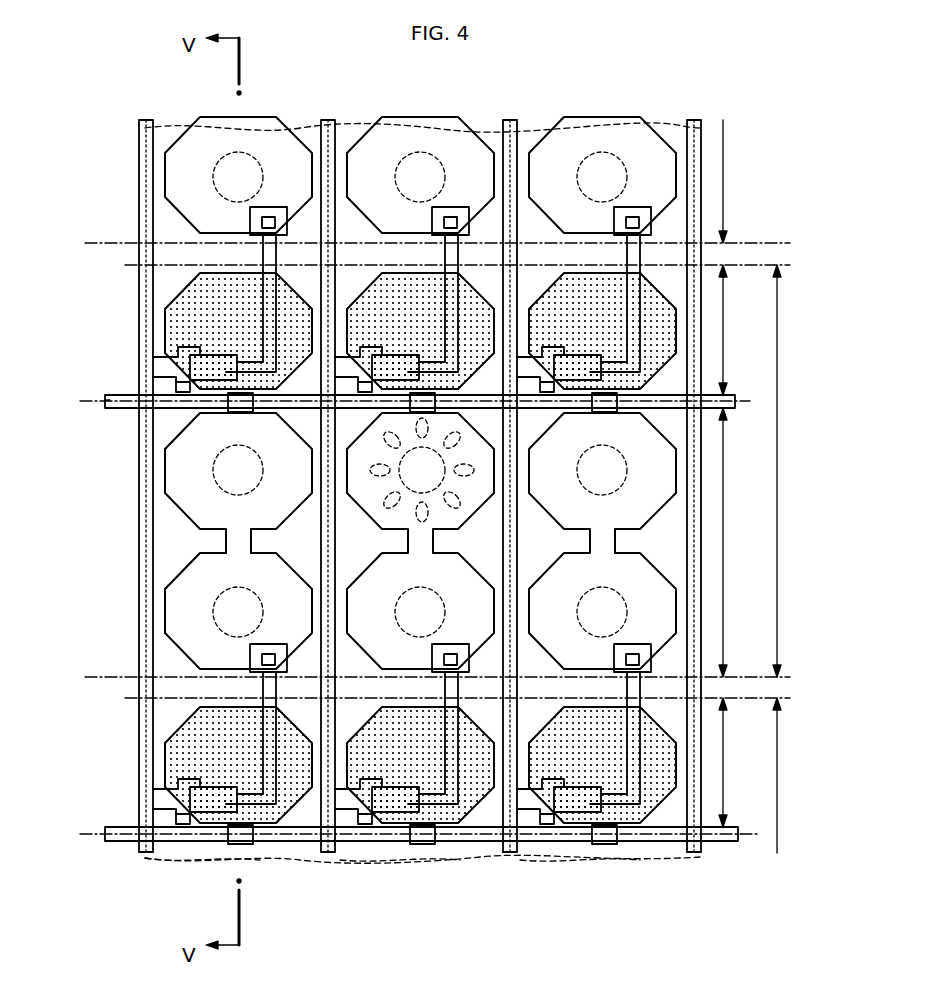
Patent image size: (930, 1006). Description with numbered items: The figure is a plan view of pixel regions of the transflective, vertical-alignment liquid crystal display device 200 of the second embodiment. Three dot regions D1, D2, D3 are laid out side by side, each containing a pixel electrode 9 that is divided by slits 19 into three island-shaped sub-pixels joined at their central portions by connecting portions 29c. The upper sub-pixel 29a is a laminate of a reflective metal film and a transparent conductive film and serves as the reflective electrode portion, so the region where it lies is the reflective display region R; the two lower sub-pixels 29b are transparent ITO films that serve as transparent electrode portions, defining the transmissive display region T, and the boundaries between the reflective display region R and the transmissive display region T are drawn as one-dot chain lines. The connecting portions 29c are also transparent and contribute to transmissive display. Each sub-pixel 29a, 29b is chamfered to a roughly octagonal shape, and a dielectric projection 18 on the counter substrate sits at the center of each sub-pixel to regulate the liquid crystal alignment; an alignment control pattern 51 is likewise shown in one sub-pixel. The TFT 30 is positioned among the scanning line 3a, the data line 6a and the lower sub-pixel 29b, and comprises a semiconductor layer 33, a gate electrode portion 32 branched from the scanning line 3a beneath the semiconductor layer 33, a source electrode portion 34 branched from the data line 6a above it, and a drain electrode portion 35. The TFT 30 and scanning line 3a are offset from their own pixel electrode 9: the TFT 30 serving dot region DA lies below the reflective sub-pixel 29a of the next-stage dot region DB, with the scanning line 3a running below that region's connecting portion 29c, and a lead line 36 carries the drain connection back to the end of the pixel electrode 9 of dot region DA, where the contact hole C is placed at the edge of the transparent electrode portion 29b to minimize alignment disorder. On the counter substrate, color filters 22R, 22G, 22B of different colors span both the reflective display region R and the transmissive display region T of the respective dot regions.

The liquid crystal display device 200 is at (774, 124).
The pixel electrode 9 is at (266, 118).
The dot region D1 is at (175, 276).
The dot region D2 is at (358, 274).
The dot region D3 is at (545, 274).
The dielectric projection 18 is at (165, 316).
The TFT 30 is at (133, 368).
The scanning line 3a is at (105, 398).
The sub-pixel 29a is at (200, 413).
The sub-pixel 29b is at (183, 472).
The connecting portion 29c is at (185, 448).
The slit 19 is at (292, 540).
The alignment control pattern 51 is at (462, 500).
The contact hole C is at (250, 655).
The lead line 36 is at (263, 690).
The semiconductor layer 33 is at (190, 790).
The source electrode portion 34 is at (165, 805).
The gate electrode portion 32 is at (183, 823).
The drain electrode portion 35 is at (255, 812).
The data line 6a is at (146, 855).
The color filter 22R is at (197, 860).
The color filter 22G is at (420, 862).
The color filter 22B is at (600, 860).
The transmissive display region T is at (732, 398).
The reflective display region R is at (733, 546).
The dot region DA is at (794, 471).
The dot region DB is at (794, 775).